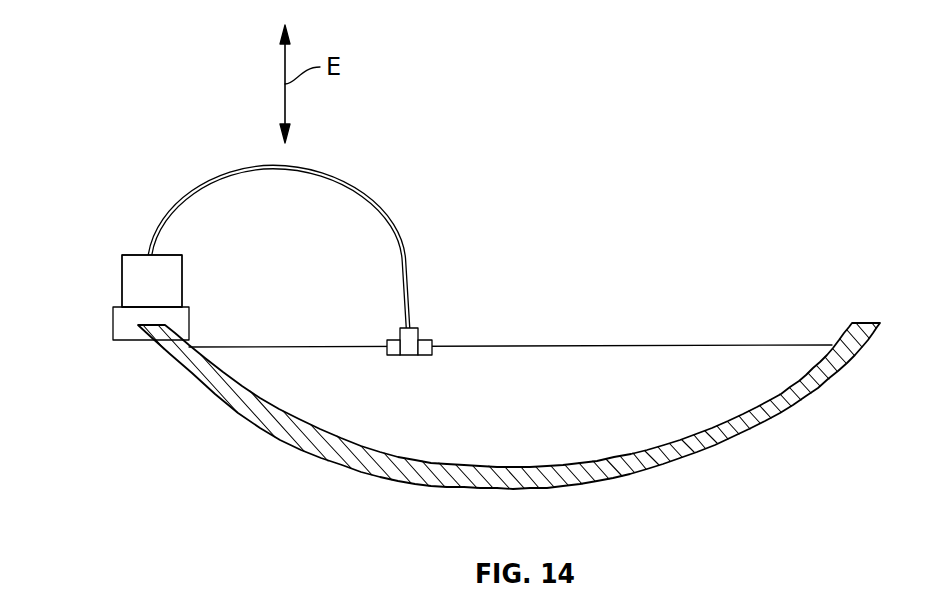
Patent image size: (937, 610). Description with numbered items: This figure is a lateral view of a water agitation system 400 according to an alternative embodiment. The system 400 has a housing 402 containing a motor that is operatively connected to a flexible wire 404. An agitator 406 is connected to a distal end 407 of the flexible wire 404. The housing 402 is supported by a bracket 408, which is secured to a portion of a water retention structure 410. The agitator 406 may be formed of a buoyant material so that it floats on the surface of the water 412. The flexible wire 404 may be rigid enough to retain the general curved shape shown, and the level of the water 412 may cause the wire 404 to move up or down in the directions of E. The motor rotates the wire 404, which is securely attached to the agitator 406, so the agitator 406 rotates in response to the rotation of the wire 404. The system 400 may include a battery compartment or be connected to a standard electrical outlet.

The water agitation system 400 is at (126, 251).
The housing 402 is at (122, 283).
The flexible wire 404 is at (397, 236).
The agitator 406 is at (391, 341).
The distal end 407 is at (414, 329).
The bracket 408 is at (113, 325).
The water retention structure 410 is at (193, 387).
The water 412 is at (556, 346).